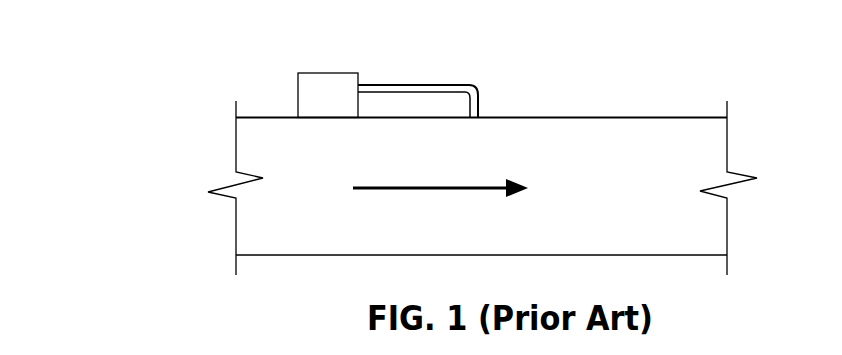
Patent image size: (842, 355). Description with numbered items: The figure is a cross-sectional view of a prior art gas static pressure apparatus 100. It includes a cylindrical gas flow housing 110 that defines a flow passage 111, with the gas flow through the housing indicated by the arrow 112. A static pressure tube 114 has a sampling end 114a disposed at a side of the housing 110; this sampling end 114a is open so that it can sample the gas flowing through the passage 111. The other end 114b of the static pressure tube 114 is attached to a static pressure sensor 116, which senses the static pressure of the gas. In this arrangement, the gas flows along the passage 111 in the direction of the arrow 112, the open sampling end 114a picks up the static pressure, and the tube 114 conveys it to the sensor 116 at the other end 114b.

The gas static pressure apparatus 100 is at (160, 60).
The cylindrical gas flow housing 110 is at (625, 117).
The flow passage 111 is at (662, 216).
The arrow 112 is at (433, 186).
The static pressure tube 114 is at (465, 76).
The sampling end 114a is at (480, 108).
The other end 114b is at (359, 80).
The static pressure sensor 116 is at (350, 108).